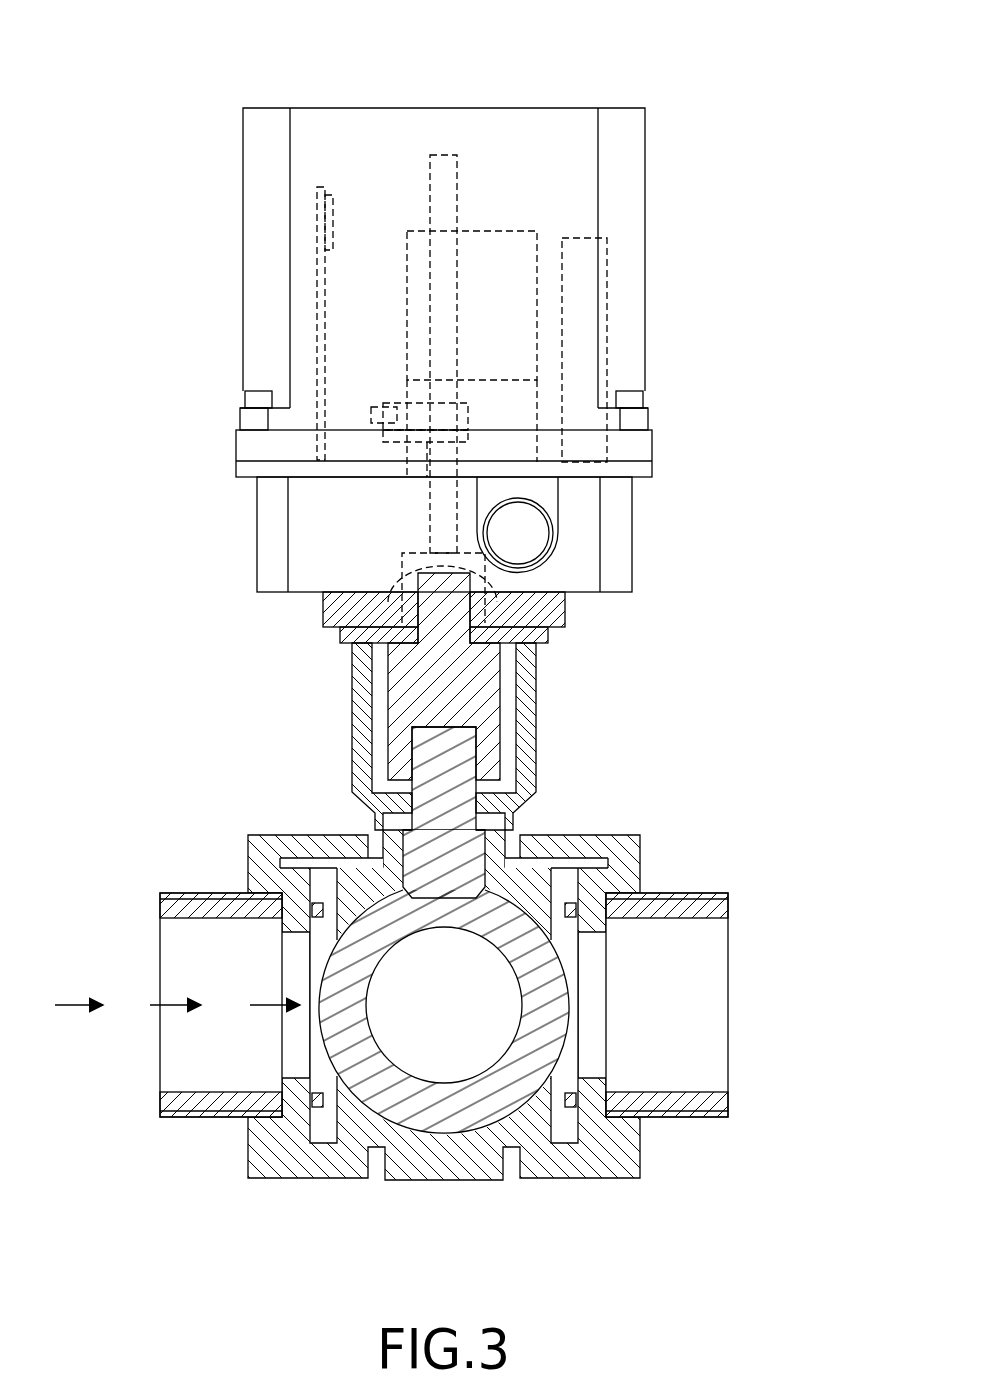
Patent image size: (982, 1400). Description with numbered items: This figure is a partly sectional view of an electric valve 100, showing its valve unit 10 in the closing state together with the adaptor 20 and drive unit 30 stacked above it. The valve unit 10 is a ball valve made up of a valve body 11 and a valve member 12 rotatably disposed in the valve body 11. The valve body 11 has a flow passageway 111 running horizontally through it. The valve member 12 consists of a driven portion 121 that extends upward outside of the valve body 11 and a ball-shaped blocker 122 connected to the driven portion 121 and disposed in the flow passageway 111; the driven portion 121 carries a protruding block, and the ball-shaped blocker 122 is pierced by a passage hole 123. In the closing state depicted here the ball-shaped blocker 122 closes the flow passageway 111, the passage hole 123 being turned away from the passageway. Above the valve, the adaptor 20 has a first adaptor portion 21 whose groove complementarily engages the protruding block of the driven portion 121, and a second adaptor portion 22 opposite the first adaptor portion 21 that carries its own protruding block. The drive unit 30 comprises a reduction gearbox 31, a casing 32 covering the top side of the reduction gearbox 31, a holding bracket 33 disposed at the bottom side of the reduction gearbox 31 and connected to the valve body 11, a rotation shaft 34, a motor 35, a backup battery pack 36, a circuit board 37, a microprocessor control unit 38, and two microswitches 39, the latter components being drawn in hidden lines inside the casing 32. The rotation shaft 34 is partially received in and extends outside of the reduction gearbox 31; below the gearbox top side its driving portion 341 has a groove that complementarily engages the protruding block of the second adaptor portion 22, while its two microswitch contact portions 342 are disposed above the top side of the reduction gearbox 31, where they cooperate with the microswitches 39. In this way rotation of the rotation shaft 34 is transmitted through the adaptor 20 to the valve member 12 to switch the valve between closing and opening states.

The electric valve 100 is at (441, 647).
The drive unit 30 is at (459, 312).
The casing 32 is at (646, 161).
The reduction gearbox 31 is at (632, 531).
The rotation shaft 34 is at (430, 321).
The motor 35 is at (516, 230).
The microswitch contact portions 342 is at (468, 415).
The microswitches 39 is at (345, 410).
The circuit board 37 is at (317, 268).
The microprocessor control unit 38 is at (328, 212).
The backup battery pack 36 is at (607, 280).
The driving portion 341 is at (440, 580).
The adaptor 20 is at (412, 701).
The second adaptor portion 22 is at (430, 606).
The holding bracket 33 is at (530, 672).
The first adaptor portion 21 is at (445, 732).
The valve unit 10 is at (441, 1011).
The valve body 11 is at (487, 1182).
The valve member 12 is at (478, 1011).
The driven portion 121 is at (458, 748).
The ball-shaped blocker 122 is at (444, 1075).
The passage hole 123 is at (430, 1035).
The flow passageway 111 is at (712, 1003).